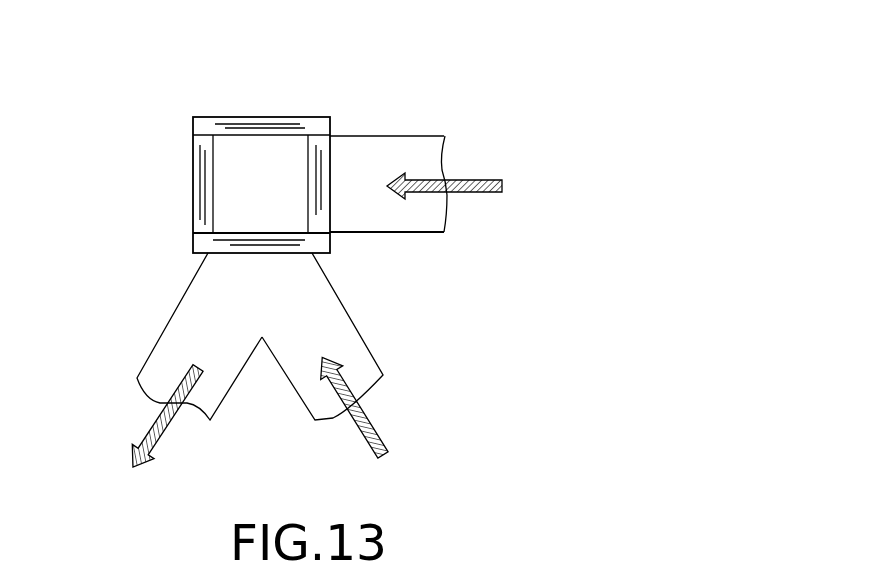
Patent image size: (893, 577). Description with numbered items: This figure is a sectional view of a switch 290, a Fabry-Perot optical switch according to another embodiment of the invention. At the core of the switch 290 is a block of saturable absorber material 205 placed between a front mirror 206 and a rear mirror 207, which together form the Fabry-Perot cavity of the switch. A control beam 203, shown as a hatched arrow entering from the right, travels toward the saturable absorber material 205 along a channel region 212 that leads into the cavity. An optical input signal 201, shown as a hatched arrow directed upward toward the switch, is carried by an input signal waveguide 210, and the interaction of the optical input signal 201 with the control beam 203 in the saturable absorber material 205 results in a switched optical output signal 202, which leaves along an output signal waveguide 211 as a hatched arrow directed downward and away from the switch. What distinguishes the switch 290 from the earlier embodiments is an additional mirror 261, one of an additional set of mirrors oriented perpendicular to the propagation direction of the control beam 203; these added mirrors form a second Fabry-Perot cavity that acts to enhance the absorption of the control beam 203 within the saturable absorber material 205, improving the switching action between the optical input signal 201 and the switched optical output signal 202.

The optical input signal 201 is at (377, 430).
The switched optical output signal 202 is at (157, 445).
The control beam 203 is at (473, 195).
The saturable absorber material 205 is at (263, 165).
The front mirror 206 is at (198, 255).
The rear mirror 207 is at (240, 127).
The input signal waveguide 210 is at (380, 368).
The output signal waveguide 211 is at (201, 337).
The light channel 212 is at (403, 136).
The additional mirror 261 is at (320, 210).
The switch 290 is at (495, 140).